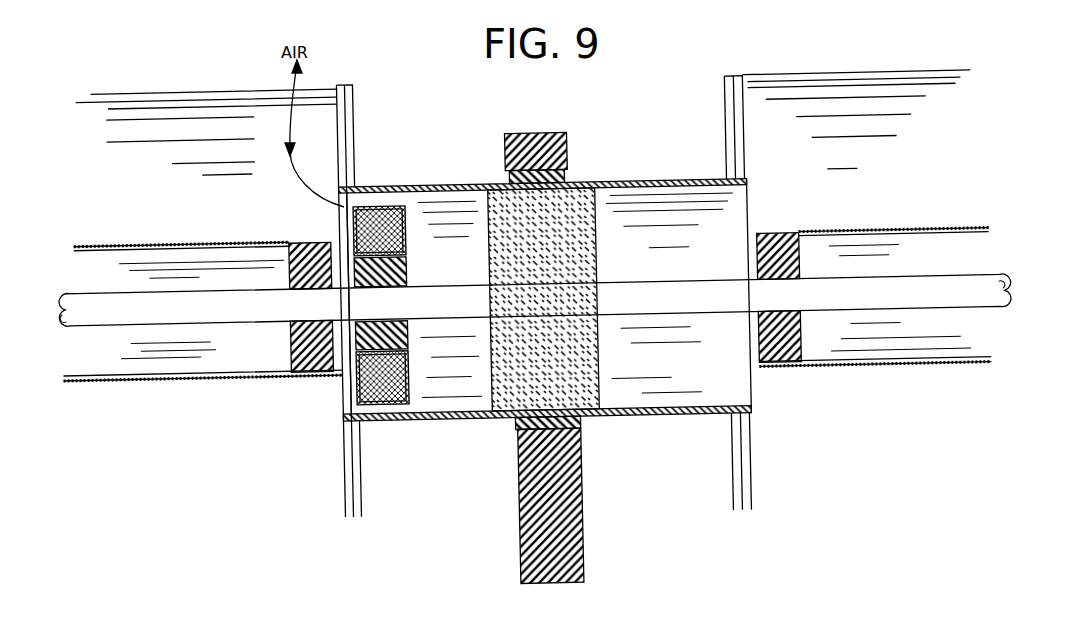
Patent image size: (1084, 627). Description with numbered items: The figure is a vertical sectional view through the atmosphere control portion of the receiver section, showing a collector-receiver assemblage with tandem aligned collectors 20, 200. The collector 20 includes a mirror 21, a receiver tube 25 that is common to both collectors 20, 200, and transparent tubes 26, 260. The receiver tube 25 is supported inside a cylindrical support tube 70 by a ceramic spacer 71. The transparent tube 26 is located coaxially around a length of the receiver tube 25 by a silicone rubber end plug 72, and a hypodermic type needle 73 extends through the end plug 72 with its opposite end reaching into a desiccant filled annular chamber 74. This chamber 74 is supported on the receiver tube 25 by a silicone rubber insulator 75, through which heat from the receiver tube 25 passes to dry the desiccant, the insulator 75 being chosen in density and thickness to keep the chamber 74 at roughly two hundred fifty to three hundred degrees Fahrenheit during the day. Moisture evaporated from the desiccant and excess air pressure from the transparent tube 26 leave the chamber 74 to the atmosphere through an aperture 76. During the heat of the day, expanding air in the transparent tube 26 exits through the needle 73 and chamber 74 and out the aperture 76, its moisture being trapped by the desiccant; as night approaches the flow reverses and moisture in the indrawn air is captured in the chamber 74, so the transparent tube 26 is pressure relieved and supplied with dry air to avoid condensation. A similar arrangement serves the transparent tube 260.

The collector 20 is at (361, 103).
The collector 200 is at (720, 91).
The mirror 21 is at (134, 118).
The transparent tube 26 is at (228, 243).
The receiver tube 25 is at (425, 298).
The cylindrical support tube 70 is at (570, 190).
The ceramic spacer 71 is at (605, 213).
The silicone rubber end plug 72 is at (290, 373).
The hypodermic type needle 73 is at (338, 375).
The desiccant filled annular chamber 74 is at (399, 206).
The silicone rubber insulator 75 is at (353, 402).
The aperture 76 is at (408, 229).
The transparent tube 260 is at (876, 364).